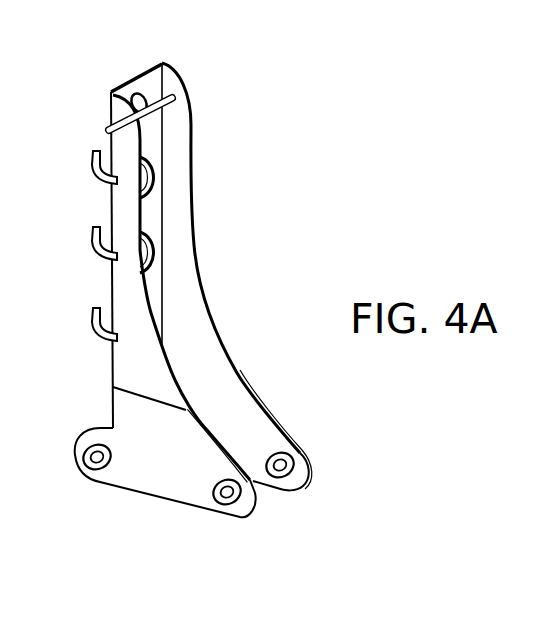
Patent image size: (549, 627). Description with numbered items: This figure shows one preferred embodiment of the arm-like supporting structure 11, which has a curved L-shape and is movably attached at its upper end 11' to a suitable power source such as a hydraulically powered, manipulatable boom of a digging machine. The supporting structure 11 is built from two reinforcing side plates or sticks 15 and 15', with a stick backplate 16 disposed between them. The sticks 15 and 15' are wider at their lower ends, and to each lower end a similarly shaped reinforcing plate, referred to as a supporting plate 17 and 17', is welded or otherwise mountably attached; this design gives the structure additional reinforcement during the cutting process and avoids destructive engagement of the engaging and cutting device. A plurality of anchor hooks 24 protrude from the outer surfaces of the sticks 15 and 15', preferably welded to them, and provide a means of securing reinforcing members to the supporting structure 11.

The supporting structure 11 is at (213, 303).
The upper end 11' is at (180, 303).
The stick 15 is at (156, 287).
The stick 15' is at (232, 258).
The stick backplate 16 is at (133, 77).
The supporting plate 17 is at (165, 472).
The supporting plate 17' is at (292, 435).
The anchor hooks 24 is at (93, 154).